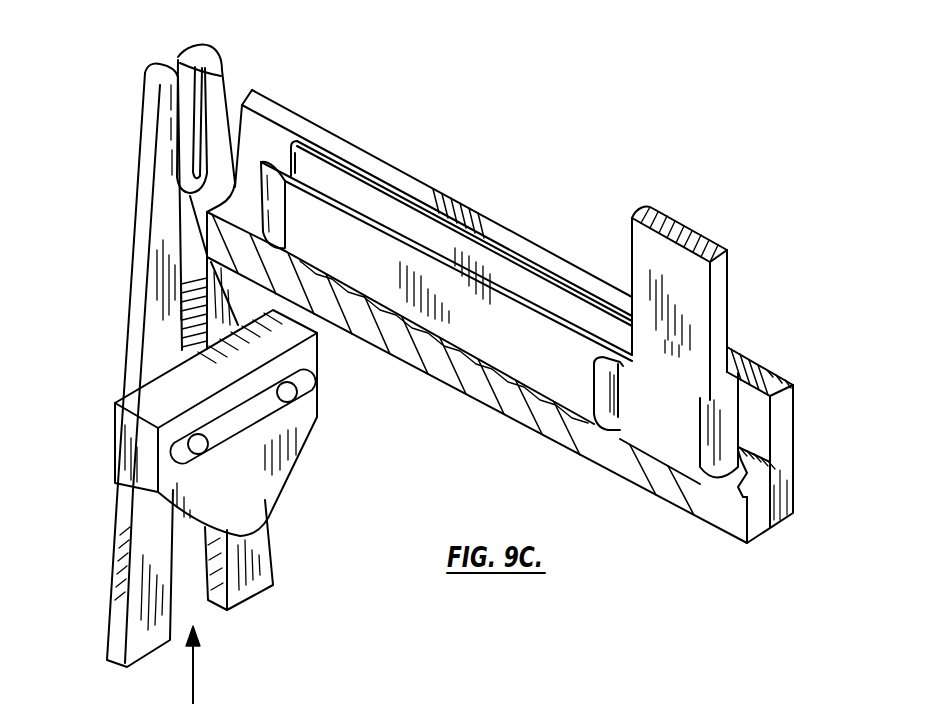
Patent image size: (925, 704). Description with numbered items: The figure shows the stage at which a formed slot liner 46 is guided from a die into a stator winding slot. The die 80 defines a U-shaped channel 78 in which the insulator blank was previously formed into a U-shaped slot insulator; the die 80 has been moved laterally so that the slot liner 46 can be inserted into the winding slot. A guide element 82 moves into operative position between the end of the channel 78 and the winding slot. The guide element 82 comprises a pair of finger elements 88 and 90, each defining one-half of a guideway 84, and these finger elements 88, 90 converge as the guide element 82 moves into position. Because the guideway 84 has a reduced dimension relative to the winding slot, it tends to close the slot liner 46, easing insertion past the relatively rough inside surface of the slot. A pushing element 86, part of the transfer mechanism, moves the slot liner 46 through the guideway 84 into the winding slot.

The slot liner 46 is at (413, 223).
The U-shaped channel 78 is at (820, 483).
The die 80 is at (797, 417).
The guide element 82 is at (116, 242).
The guideway 84 is at (192, 102).
The pushing element 86 is at (720, 290).
The finger element 88 is at (117, 595).
The finger element 90 is at (253, 543).